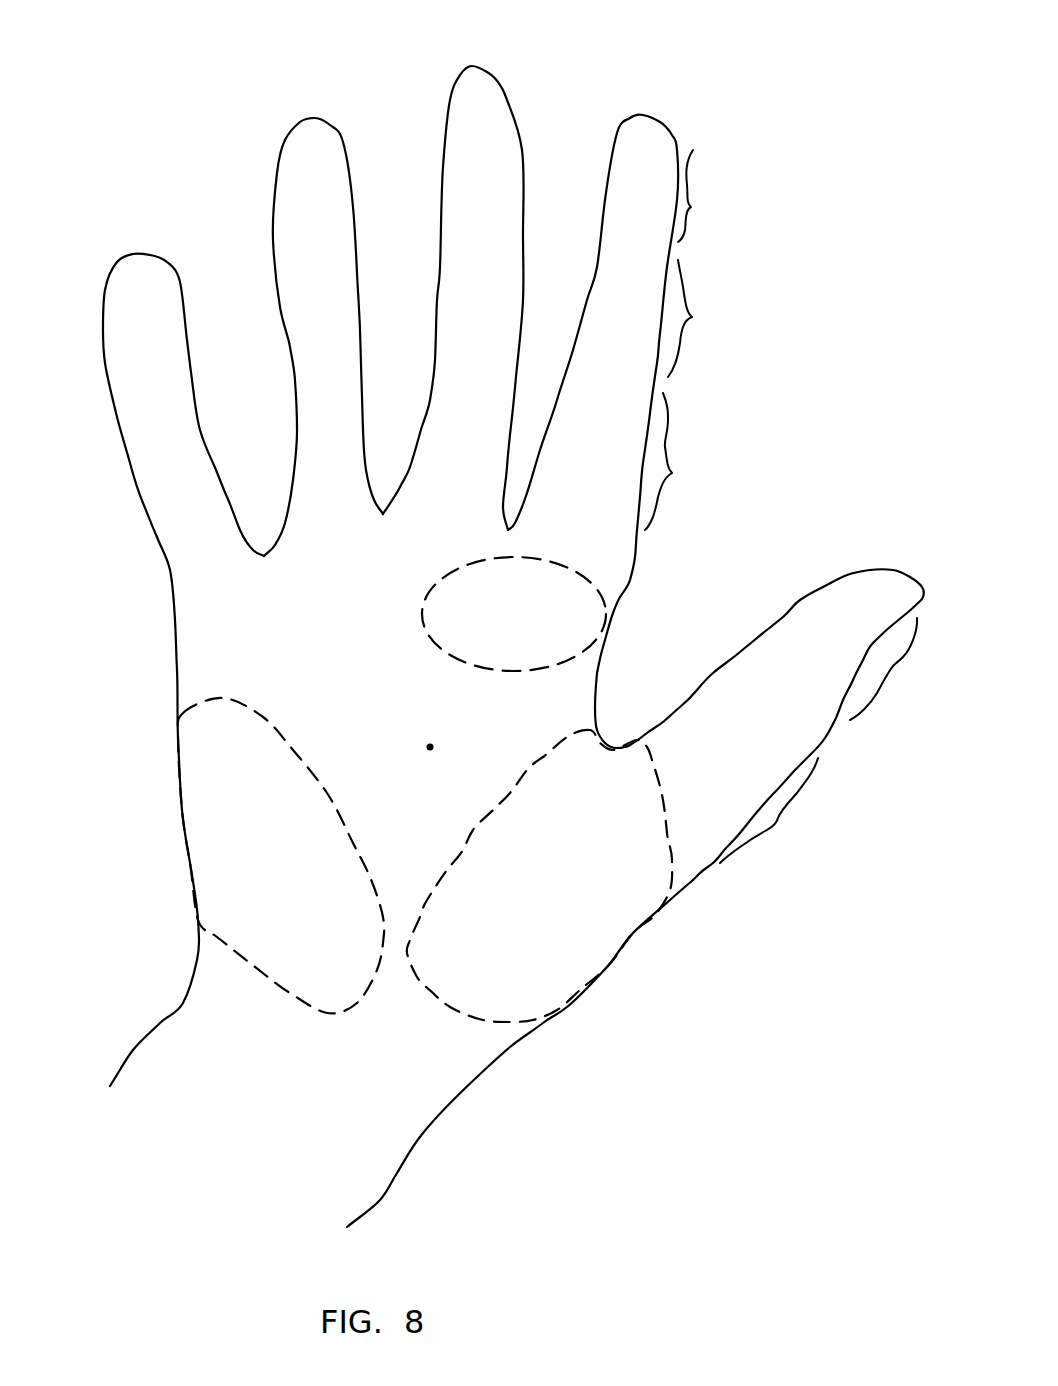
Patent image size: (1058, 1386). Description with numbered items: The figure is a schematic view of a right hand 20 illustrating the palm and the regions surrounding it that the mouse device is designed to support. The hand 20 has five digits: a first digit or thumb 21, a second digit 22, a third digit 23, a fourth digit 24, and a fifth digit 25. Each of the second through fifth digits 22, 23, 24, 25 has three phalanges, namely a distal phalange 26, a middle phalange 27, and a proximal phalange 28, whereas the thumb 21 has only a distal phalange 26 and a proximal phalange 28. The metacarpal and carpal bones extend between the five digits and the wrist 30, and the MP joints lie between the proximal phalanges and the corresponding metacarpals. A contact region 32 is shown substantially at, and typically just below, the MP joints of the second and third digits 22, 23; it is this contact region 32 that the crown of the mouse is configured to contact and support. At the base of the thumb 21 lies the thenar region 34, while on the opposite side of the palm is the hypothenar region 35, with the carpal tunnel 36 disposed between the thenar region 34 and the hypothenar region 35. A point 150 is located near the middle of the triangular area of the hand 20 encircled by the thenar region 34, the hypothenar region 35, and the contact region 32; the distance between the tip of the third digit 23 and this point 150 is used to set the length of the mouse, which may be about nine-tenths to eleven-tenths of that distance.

The right hand 20 is at (814, 150).
The thumb 21 is at (827, 600).
The second digit 22 is at (657, 143).
The third digit 23 is at (485, 88).
The fourth digit 24 is at (307, 140).
The fifth digit 25 is at (146, 270).
The distal phalange 26 is at (809, 435).
The middle phalange 27 is at (705, 318).
The proximal phalange 28 is at (731, 628).
The wrist 30 is at (273, 1068).
The contact region 32 is at (553, 600).
The thenar region 34 is at (577, 933).
The hypothenar region 35 is at (220, 842).
The carpal tunnel 36 is at (401, 930).
The point 150 is at (430, 747).